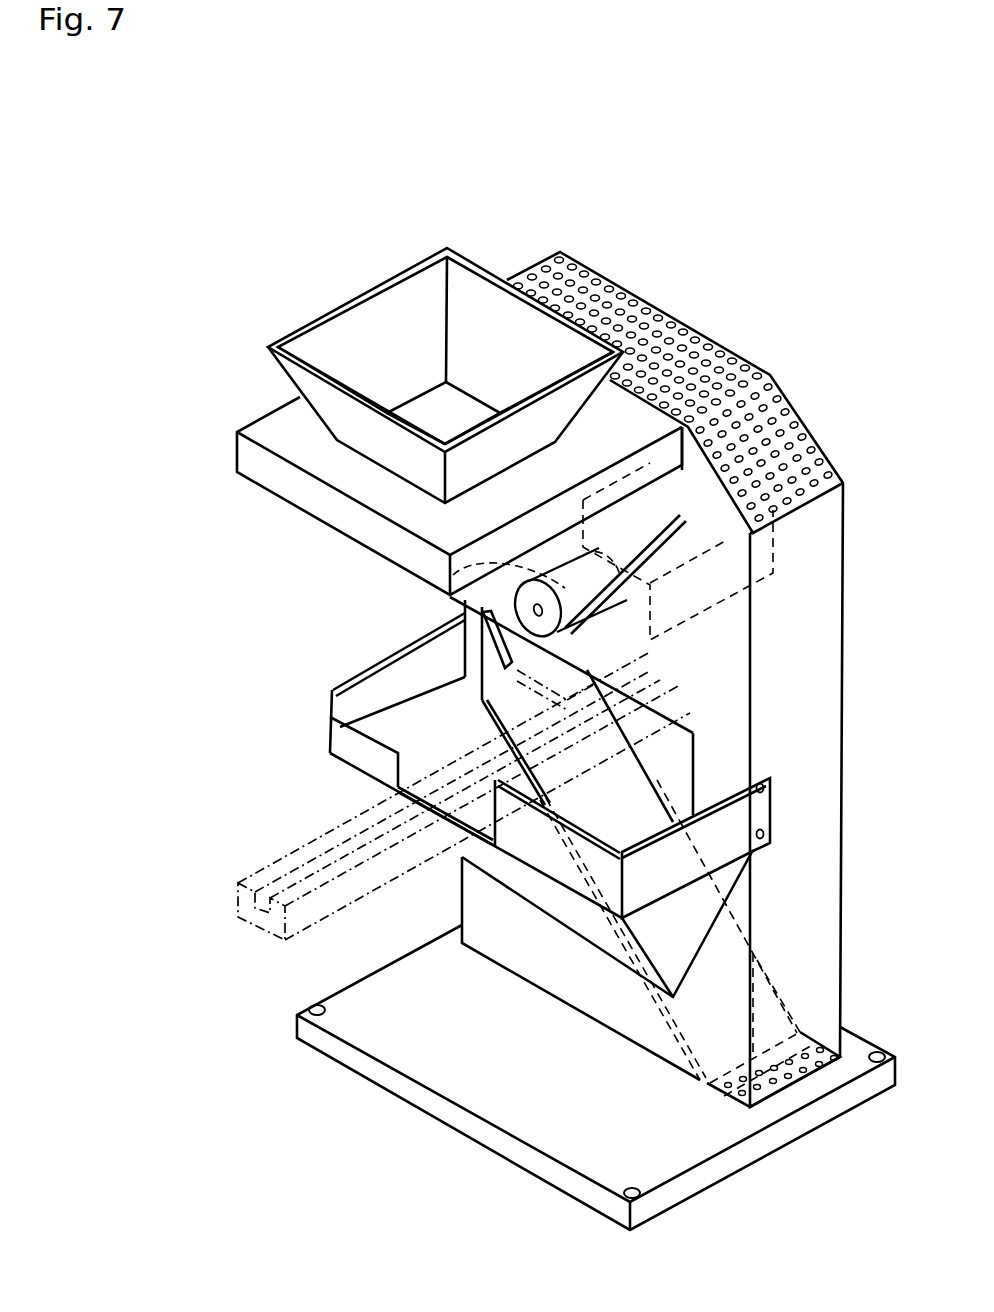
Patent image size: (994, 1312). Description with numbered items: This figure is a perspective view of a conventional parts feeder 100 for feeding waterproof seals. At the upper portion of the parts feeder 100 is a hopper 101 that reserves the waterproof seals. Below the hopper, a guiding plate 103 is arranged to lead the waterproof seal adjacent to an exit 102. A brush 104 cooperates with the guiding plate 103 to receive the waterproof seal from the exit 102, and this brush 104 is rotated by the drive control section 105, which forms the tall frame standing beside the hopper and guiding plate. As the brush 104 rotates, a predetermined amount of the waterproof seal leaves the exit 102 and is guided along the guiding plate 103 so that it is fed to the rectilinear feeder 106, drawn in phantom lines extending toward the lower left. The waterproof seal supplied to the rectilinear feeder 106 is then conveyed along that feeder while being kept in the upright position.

The parts feeder 100 is at (253, 242).
The hopper 101 is at (257, 498).
The exit 102 is at (478, 646).
The guiding plate 103 is at (485, 615).
The brush 104 is at (455, 574).
The drive control section 105 is at (777, 553).
The rectilinear feeder 106 is at (227, 908).